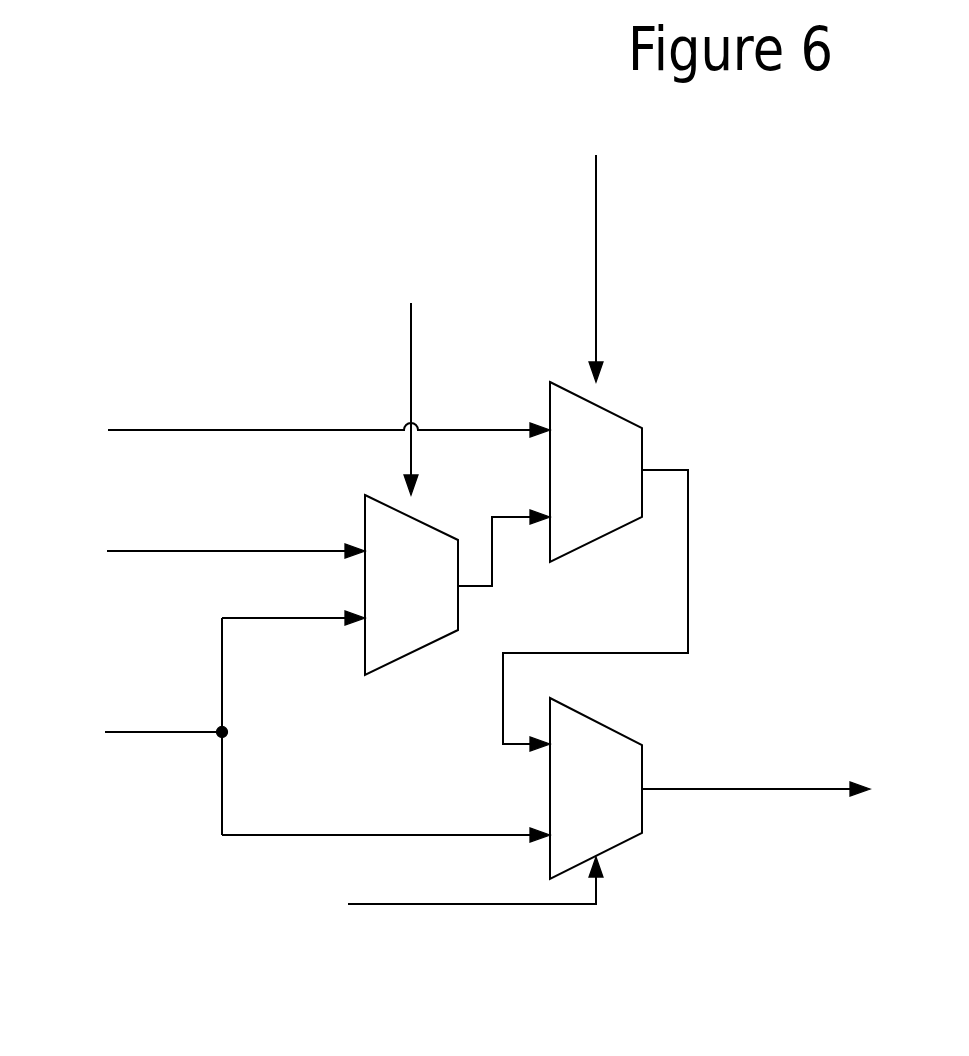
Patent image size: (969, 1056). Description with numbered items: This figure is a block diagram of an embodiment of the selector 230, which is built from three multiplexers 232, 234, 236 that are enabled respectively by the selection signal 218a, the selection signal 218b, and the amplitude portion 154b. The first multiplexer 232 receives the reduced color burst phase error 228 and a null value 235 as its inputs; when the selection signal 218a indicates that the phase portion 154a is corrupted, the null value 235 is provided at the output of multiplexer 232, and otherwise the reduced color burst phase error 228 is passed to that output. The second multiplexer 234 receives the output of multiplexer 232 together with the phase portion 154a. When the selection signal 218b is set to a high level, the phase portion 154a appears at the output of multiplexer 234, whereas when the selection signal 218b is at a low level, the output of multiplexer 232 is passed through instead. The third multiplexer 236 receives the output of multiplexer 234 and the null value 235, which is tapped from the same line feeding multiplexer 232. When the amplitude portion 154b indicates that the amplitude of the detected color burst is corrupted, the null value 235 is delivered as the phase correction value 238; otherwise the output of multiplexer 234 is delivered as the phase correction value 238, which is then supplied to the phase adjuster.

The selector 230 is at (135, 200).
The multiplexer 232 is at (411, 585).
The multiplexer 234 is at (596, 472).
The multiplexer 236 is at (596, 788).
The phase portion 154a is at (150, 430).
The amplitude portion 154b is at (435, 904).
The selection signal 218a is at (411, 335).
The selection signal 218b is at (596, 250).
The reduced color burst phase error 228 is at (175, 551).
The null value 235 is at (140, 732).
The phase correction value 238 is at (805, 789).